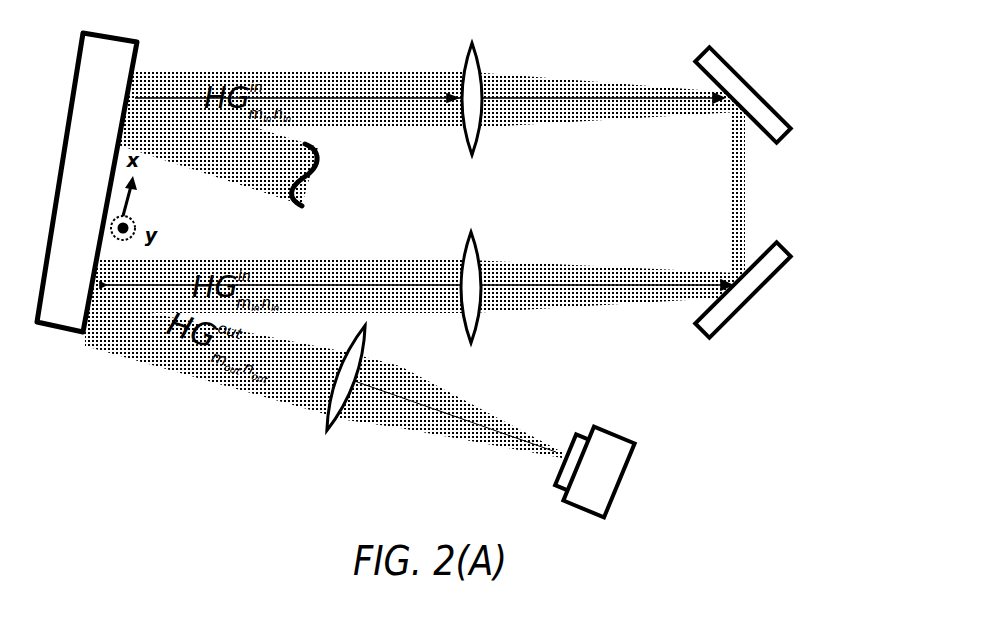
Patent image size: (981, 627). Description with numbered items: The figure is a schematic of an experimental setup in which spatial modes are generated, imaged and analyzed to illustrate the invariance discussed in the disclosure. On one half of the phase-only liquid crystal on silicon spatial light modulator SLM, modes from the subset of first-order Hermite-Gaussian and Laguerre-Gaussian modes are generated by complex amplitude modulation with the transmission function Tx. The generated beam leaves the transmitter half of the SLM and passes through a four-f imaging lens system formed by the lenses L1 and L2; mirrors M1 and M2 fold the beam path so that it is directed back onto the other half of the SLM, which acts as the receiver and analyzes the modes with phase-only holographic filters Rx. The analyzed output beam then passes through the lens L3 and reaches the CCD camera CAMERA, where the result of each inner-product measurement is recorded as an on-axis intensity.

The spatial light modulator SLM is at (87, 182).
The imaging lens L1 is at (470, 118).
The imaging lens L2 is at (472, 304).
The third lens L3 is at (345, 397).
The first mirror M1 is at (743, 95).
The second mirror M2 is at (743, 292).
The CCD camera CAMERA is at (617, 450).